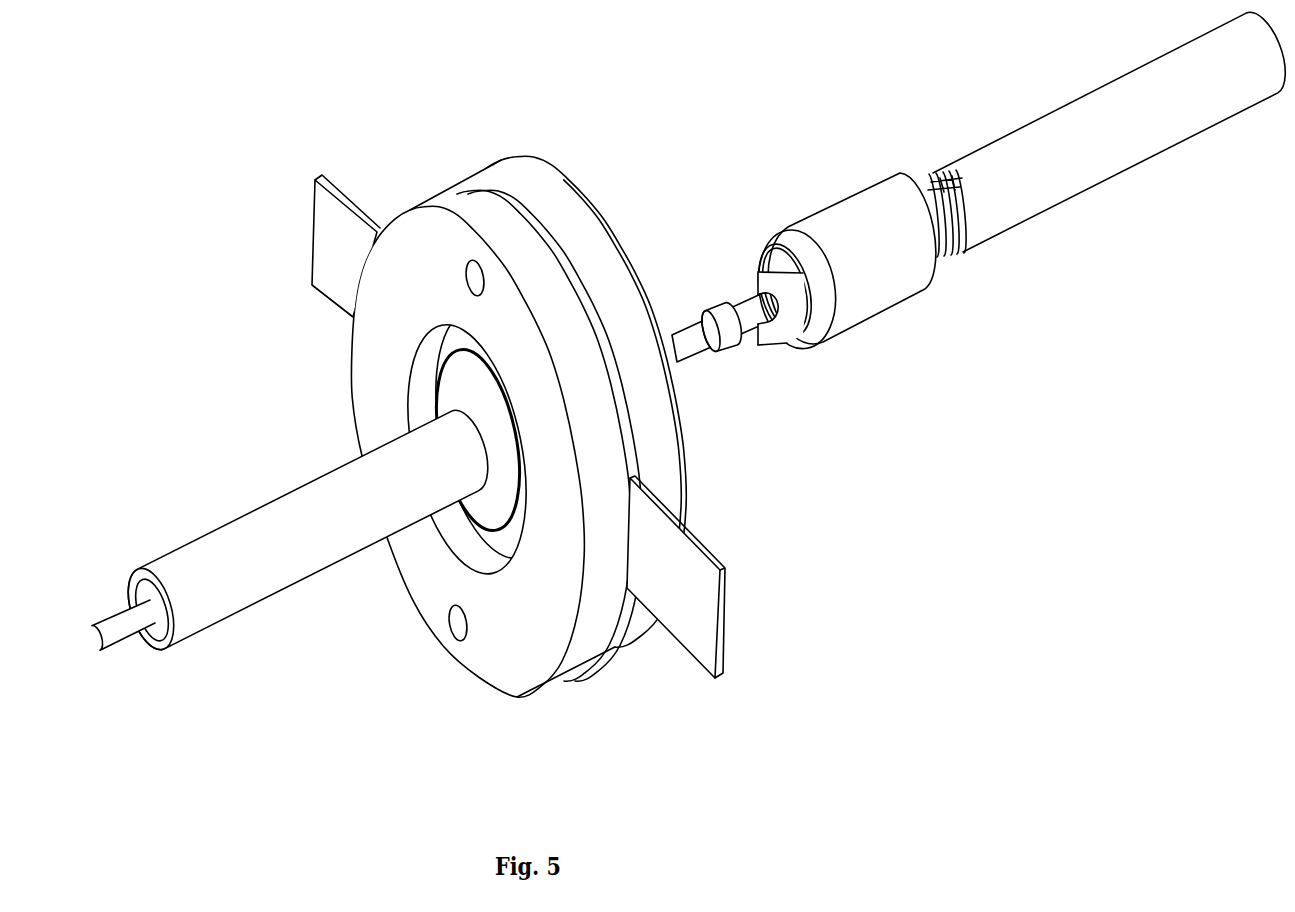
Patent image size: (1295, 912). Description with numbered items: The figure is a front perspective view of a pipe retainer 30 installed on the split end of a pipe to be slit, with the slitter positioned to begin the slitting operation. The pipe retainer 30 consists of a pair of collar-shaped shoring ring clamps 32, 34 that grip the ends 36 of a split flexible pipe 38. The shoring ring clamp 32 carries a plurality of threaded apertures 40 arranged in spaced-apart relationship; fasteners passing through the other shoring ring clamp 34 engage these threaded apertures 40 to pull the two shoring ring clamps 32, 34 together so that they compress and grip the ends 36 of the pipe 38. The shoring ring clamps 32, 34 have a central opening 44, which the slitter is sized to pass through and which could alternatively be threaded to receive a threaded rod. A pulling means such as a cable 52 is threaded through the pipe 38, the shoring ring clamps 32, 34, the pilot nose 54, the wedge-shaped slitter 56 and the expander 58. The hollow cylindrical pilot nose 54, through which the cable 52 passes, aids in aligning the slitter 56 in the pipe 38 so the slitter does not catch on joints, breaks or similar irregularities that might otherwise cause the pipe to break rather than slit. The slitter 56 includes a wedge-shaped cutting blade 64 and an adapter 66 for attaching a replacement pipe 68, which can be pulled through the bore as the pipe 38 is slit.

The pipe retainer 30 is at (510, 117).
The shoring ring clamp 32 is at (422, 203).
The shoring ring clamp 34 is at (497, 173).
The ends of split flexible pipe 36 is at (313, 233).
The split flexible pipe 38 is at (227, 521).
The threaded apertures 40 is at (467, 277).
The central opening 44 is at (443, 387).
The cable 52 is at (106, 618).
The pilot nose 54 is at (709, 313).
The wedge-shaped slitter 56 is at (785, 348).
The expander 58 is at (818, 210).
The wedge-shaped cutting blade 64 is at (758, 282).
The adapter 66 is at (953, 262).
The replacement pipe 68 is at (1046, 120).